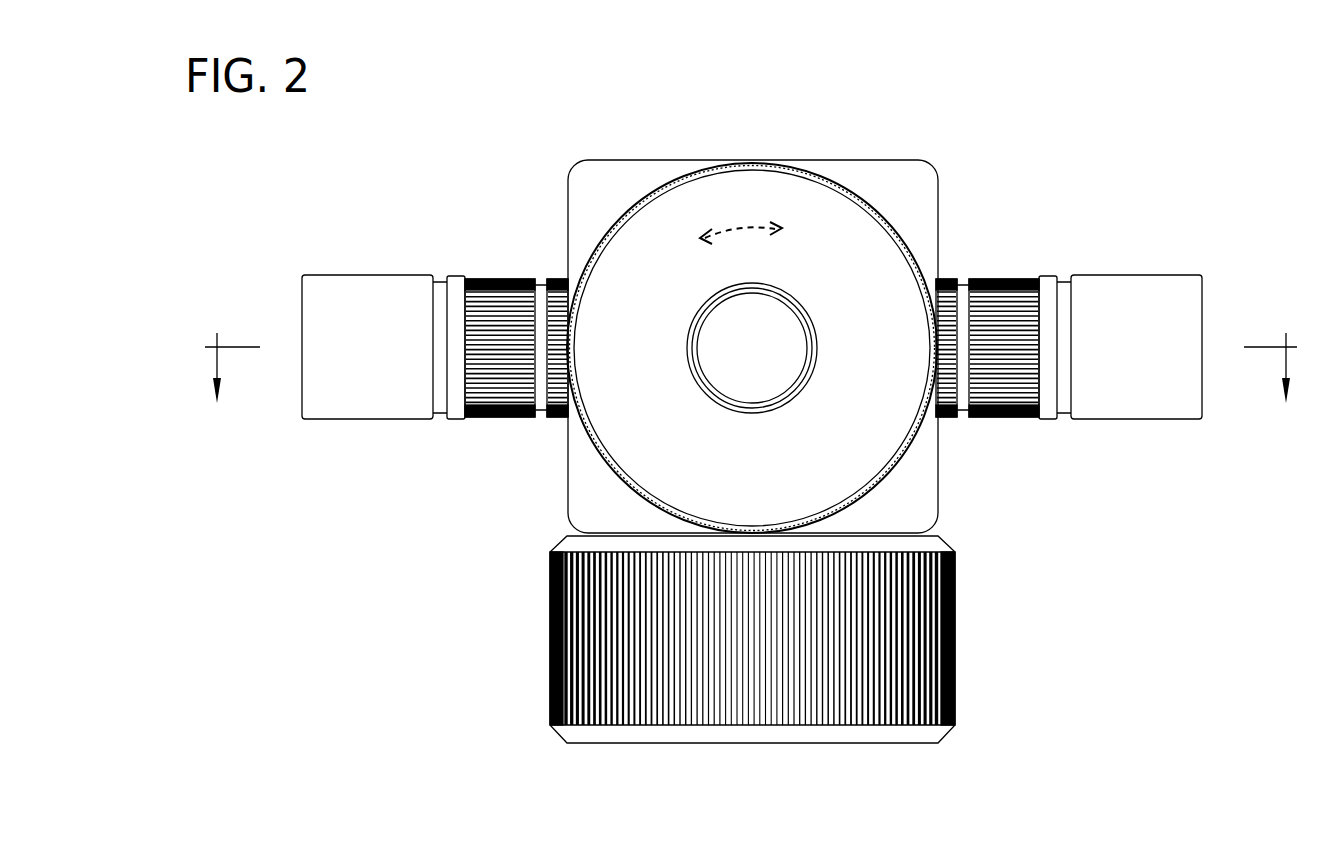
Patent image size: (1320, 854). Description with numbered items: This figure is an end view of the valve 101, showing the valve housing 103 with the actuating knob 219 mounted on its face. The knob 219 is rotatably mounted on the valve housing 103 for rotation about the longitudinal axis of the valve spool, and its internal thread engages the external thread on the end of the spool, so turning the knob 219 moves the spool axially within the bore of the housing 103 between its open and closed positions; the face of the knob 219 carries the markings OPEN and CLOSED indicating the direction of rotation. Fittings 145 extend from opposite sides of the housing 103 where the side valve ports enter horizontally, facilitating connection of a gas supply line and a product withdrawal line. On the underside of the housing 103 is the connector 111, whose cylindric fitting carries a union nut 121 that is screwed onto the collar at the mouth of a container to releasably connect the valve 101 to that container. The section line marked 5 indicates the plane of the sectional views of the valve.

The valve 101 is at (977, 123).
The valve housing 103 is at (580, 160).
The actuating knob 219 is at (747, 185).
The fittings 145 is at (342, 285).
The union nut 121 is at (550, 623).
The connector 111 is at (1000, 637).
The section line 5- 5 is at (754, 351).